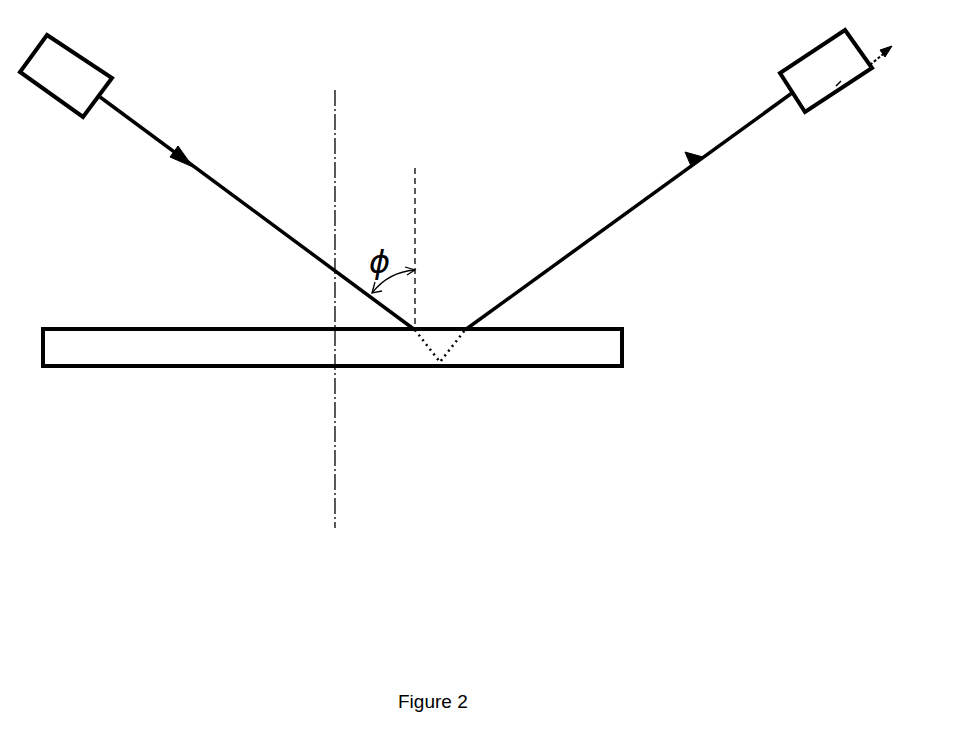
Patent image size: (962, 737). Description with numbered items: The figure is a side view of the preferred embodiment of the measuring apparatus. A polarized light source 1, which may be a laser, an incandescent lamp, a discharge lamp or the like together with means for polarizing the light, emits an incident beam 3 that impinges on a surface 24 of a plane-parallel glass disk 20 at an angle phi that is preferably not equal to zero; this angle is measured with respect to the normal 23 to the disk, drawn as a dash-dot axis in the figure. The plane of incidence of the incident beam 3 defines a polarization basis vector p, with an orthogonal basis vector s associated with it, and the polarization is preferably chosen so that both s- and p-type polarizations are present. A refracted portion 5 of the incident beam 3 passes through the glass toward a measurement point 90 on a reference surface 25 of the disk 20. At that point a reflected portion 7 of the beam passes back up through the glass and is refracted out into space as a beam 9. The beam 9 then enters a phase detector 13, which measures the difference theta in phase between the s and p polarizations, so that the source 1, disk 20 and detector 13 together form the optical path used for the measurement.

The polarized light source 1 is at (66, 71).
The incident beam 3 is at (257, 213).
The refracted portion of beam 5 is at (433, 338).
The reflected portion of beam 7 is at (452, 350).
The beam 9 is at (628, 211).
The phase detector 13 is at (830, 66).
The plane-parallel glass disk 20 is at (625, 348).
The normal axis 23 is at (336, 173).
The surface 24 is at (203, 327).
The reference surface 25 is at (202, 368).
The measurement point 90 is at (440, 367).